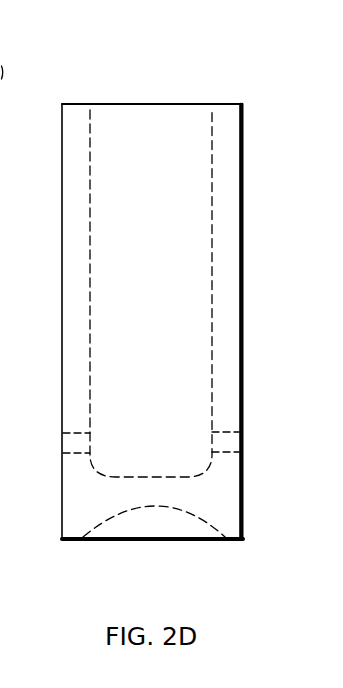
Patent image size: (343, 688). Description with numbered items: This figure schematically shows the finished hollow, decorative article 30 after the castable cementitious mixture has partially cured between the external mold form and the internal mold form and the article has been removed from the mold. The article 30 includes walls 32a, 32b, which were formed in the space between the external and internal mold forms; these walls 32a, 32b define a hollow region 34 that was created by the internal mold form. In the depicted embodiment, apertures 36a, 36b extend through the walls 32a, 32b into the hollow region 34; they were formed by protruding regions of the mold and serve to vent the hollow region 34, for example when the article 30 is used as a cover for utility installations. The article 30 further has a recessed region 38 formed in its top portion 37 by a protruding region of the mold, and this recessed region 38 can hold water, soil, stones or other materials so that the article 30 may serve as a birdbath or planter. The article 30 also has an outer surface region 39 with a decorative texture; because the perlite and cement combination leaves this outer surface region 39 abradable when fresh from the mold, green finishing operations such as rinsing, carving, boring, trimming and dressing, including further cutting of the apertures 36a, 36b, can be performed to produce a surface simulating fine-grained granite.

The hollow, decorative article 30 is at (188, 21).
The wall 32a is at (75, 110).
The wall 32b is at (230, 124).
The hollow region 34 is at (158, 90).
The aperture 36a is at (62, 445).
The aperture 36b is at (250, 445).
The top portion 37 is at (152, 490).
The recessed region 38 is at (130, 549).
The outer surface region 39 is at (250, 253).